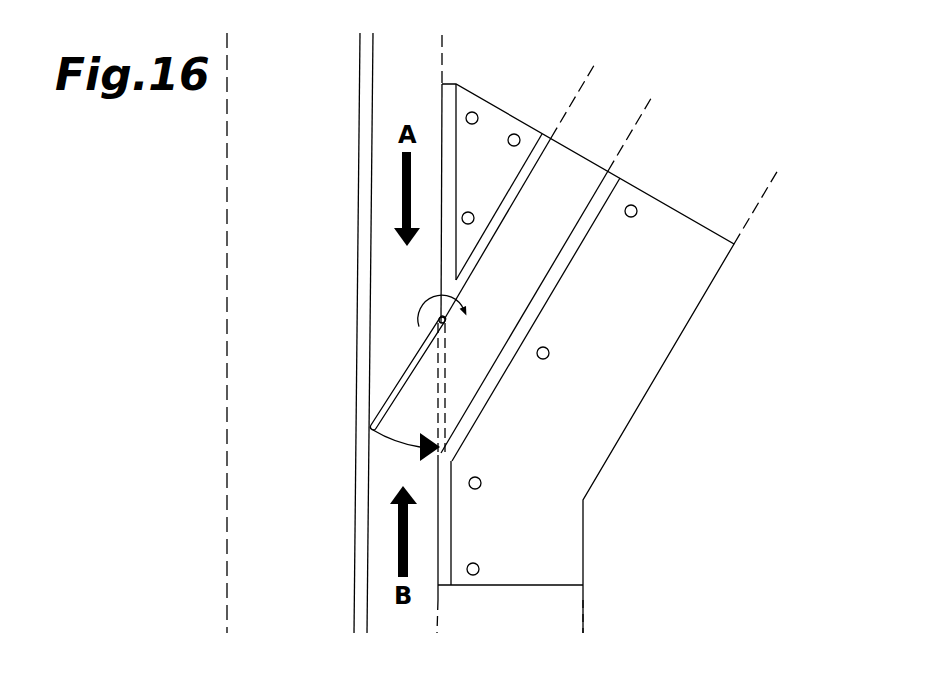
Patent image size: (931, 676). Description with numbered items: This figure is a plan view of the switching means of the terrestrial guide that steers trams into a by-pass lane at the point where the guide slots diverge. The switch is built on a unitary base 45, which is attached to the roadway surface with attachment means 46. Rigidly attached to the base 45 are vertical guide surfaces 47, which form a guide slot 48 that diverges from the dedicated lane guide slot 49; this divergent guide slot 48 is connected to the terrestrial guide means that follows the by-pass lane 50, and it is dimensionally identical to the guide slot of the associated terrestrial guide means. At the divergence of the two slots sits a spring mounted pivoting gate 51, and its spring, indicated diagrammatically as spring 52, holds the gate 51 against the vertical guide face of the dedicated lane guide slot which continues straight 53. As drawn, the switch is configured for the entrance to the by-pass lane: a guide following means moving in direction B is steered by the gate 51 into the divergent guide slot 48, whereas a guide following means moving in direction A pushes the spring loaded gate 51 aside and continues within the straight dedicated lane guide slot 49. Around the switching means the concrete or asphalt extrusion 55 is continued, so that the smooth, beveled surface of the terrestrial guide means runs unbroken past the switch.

The unitary base 45 is at (570, 465).
The attachment means 46 is at (482, 492).
The vertical guide surfaces 47 is at (498, 209).
The guide slot 48 is at (469, 355).
The dedicated lane guide slot 49 is at (393, 465).
The by-pass lane 50 is at (593, 120).
The spring mounted pivoting gate 51 is at (403, 372).
The spring 52 is at (426, 302).
The vertical guide face of the dedicated lane guide slot 53 is at (369, 419).
The concrete or asphalt extrusion 55 is at (229, 203).